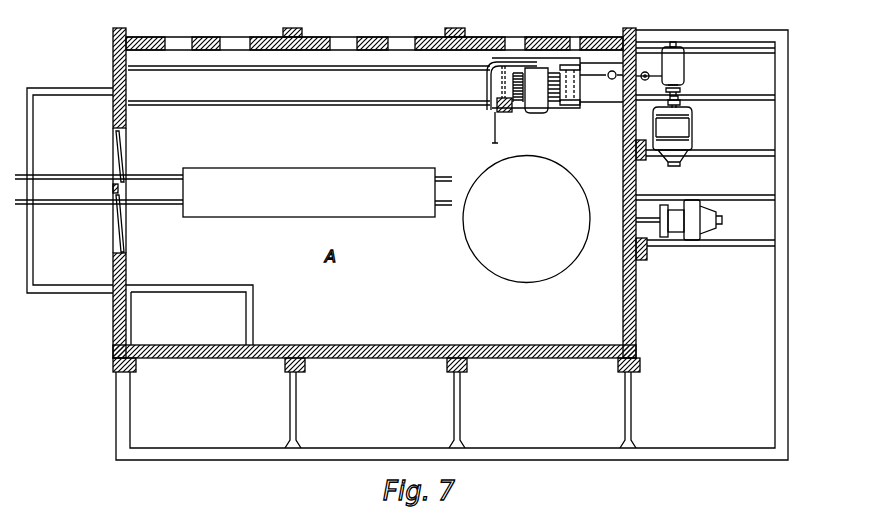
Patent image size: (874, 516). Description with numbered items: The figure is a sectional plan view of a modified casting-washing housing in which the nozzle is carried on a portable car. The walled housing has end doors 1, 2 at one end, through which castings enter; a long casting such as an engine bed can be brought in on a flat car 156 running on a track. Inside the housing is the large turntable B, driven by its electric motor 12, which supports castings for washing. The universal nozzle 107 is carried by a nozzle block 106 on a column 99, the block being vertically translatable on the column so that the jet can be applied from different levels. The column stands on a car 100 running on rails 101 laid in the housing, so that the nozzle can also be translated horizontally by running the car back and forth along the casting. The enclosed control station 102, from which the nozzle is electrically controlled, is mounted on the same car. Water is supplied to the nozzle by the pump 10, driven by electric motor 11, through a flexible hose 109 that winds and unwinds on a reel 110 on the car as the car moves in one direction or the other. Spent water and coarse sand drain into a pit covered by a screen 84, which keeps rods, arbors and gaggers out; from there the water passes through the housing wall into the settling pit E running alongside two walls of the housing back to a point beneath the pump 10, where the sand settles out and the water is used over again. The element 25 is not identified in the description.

The end door 1 is at (121, 148).
The end door 2 is at (121, 241).
The pump 10 is at (676, 76).
The electric motor 11 is at (683, 128).
The electric motor 12 is at (692, 230).
The side chamber 25 is at (70, 190).
The screen 84 is at (189, 315).
The column 99 is at (514, 112).
The car 100 is at (578, 107).
The rails 101 is at (238, 77).
The control station 102 is at (545, 114).
The nozzle block 106 is at (509, 114).
The nozzle 107 is at (493, 124).
The flexible hose 109 is at (551, 73).
The reel 110 is at (553, 96).
The flat car 156 is at (317, 192).
The large turntable B is at (541, 283).
The settling pit E is at (460, 410).